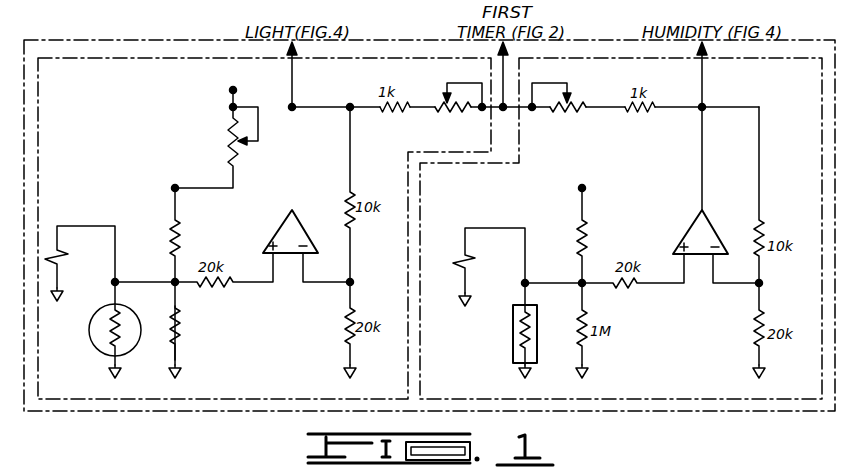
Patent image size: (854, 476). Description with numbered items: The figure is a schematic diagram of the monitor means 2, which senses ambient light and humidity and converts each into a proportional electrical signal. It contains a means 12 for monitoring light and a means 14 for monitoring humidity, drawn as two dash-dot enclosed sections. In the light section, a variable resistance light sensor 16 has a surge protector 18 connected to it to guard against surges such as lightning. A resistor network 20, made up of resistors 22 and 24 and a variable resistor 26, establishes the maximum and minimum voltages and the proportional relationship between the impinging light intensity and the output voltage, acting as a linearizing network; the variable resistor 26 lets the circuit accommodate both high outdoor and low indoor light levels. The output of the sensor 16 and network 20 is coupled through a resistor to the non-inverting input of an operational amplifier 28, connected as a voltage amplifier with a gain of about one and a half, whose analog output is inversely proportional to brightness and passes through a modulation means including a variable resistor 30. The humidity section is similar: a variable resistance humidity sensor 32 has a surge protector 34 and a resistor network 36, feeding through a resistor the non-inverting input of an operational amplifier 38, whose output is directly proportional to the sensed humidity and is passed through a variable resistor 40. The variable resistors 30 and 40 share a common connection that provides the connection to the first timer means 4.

The monitor means 2 is at (382, 37).
The first timer means 4 is at (661, 475).
The means for monitoring light 12 is at (38, 117).
The means for monitoring humidity 14 is at (422, 208).
The light sensor 16 is at (93, 346).
The surge protector 18 is at (68, 262).
The resistor network 20 is at (181, 307).
The resistor 22 is at (170, 345).
The resistor 24 is at (172, 232).
The variable resistor 26 is at (241, 141).
The operational amplifier 28 is at (293, 208).
The variable resistor 30 is at (447, 109).
The humidity sensor 32 is at (513, 340).
The surge protector 34 is at (468, 264).
The resistor network 36 is at (597, 229).
The operational amplifier 38 is at (706, 214).
The variable resistor 40 is at (560, 110).